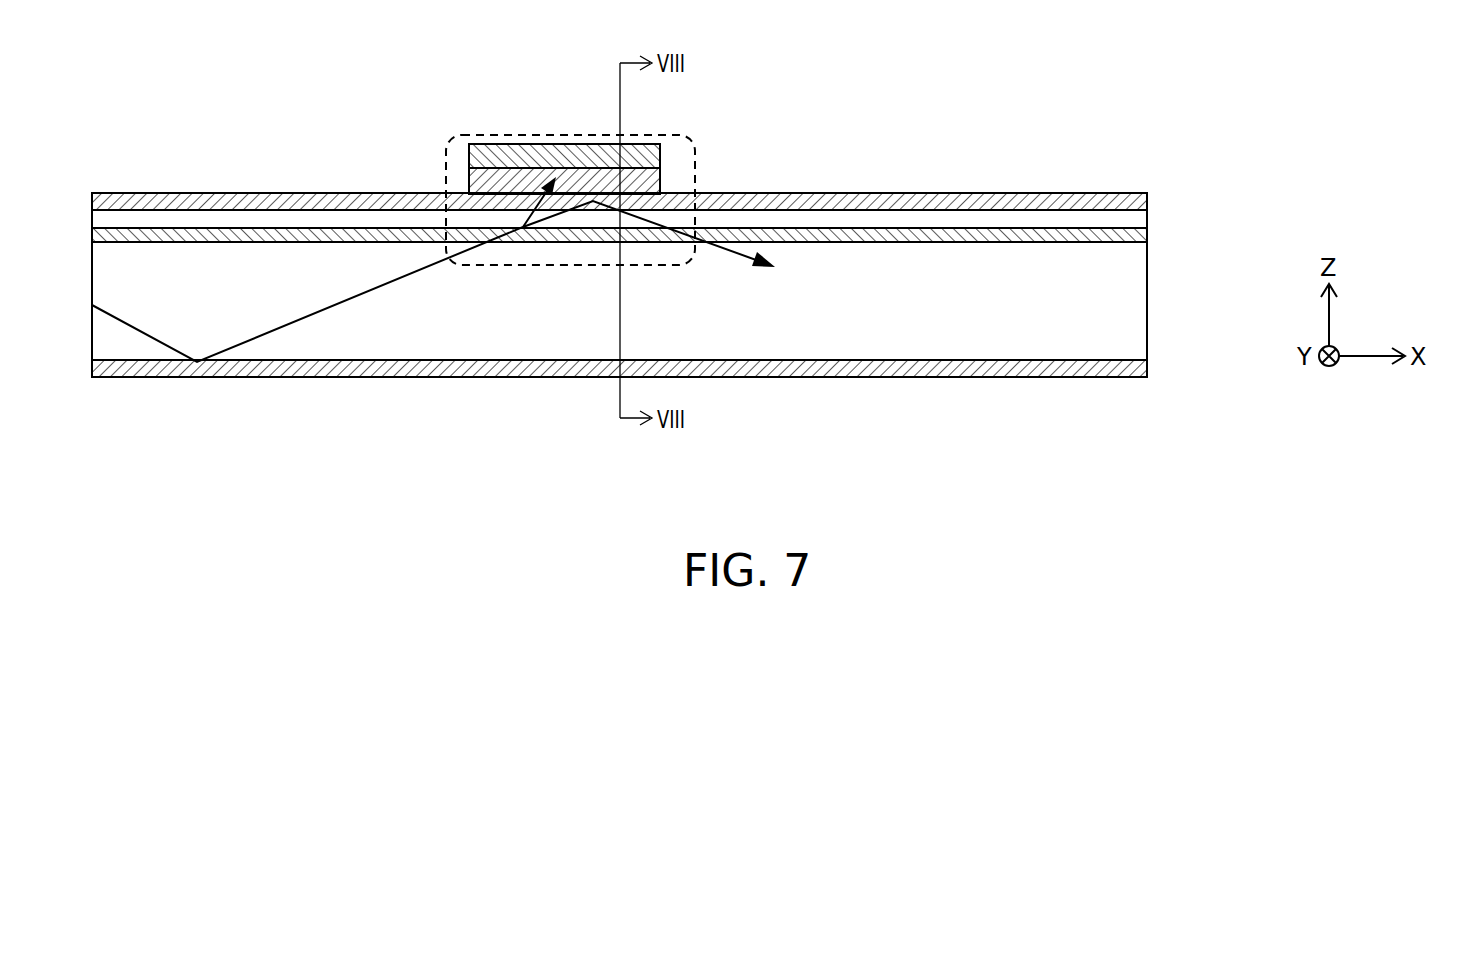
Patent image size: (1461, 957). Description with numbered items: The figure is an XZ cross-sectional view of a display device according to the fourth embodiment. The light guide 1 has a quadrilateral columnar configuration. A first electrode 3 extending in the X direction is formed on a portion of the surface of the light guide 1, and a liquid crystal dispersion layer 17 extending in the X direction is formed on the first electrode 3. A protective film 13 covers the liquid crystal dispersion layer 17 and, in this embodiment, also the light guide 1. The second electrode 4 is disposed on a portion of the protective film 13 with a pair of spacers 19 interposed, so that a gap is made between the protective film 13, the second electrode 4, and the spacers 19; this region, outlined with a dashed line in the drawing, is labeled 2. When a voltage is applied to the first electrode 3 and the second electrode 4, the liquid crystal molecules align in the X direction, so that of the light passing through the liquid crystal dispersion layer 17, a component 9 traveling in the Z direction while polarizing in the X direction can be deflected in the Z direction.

The light guide 1 is at (1135, 295).
The protective film 13 is at (1147, 199).
The liquid crystal dispersion layer 17 is at (1135, 213).
The first electrode 3 is at (1147, 237).
The second electrode 4 is at (647, 158).
The spacers 19 is at (663, 178).
The optical element region 2 is at (446, 160).
The component 9 is at (297, 322).